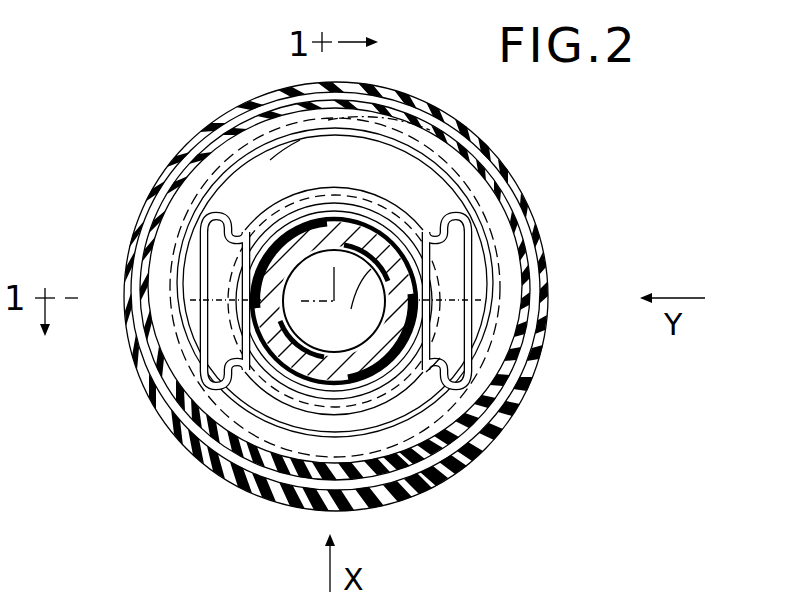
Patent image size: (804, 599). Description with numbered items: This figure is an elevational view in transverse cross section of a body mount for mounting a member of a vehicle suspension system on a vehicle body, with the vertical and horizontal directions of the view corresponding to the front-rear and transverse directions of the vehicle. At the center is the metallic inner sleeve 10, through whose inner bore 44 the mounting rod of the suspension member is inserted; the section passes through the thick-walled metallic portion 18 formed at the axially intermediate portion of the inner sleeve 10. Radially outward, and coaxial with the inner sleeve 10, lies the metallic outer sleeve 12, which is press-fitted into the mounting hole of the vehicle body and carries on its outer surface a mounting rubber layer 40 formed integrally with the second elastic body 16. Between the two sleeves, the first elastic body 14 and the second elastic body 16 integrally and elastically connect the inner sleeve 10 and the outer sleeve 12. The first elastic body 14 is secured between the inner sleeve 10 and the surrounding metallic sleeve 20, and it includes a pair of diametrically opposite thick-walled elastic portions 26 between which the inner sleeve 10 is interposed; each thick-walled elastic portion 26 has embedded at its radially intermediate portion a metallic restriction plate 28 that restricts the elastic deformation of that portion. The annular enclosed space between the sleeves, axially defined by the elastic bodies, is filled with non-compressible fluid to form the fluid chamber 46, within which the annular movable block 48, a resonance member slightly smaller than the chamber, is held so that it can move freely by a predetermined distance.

The inner sleeve 10 is at (297, 370).
The outer sleeve 12 is at (522, 164).
The first elastic body 14 is at (435, 392).
The second elastic body 16 is at (342, 487).
The thick-walled metallic portion 18 is at (463, 283).
The metallic sleeve 20 is at (200, 395).
The thick-walled elastic portions 26 is at (185, 298).
The metallic restriction plate 28 is at (201, 270).
The mounting rubber layer 40 is at (190, 147).
The inner bore 44 is at (334, 301).
The fluid chamber 46 is at (400, 153).
The movable block 48 is at (408, 128).